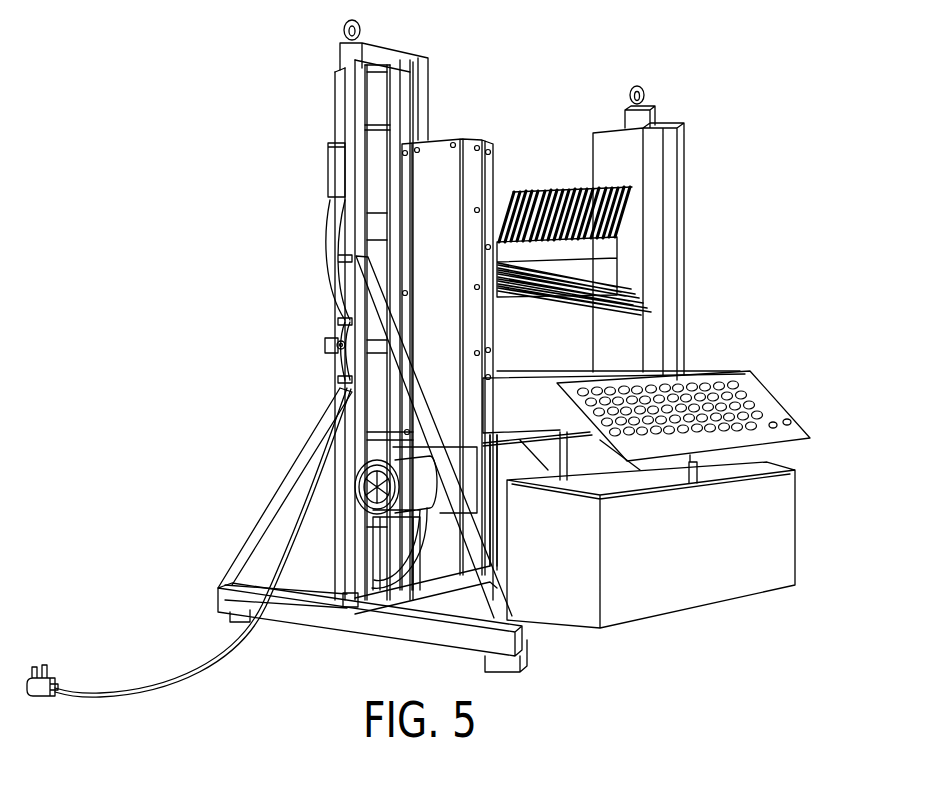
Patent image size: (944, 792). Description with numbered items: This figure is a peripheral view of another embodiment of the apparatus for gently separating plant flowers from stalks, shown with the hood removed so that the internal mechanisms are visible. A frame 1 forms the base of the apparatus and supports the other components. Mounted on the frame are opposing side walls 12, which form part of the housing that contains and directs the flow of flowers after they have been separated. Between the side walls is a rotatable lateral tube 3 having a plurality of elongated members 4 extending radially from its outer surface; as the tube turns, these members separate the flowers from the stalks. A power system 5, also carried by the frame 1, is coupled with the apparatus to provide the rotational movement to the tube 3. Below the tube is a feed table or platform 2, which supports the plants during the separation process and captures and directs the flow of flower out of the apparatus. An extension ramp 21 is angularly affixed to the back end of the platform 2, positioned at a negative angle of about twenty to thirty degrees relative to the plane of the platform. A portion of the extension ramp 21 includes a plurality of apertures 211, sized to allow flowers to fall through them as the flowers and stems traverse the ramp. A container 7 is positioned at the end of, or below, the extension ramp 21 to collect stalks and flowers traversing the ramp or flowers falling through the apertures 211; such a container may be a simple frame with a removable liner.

The frame 1 is at (337, 606).
The side walls 12 is at (436, 150).
The platform 2 is at (538, 372).
The extension ramp 21 is at (735, 390).
The apertures 211 is at (787, 422).
The lateral tube 3 is at (507, 258).
The elongated members 4 is at (550, 192).
The power system 5 is at (373, 487).
The container 7 is at (705, 588).